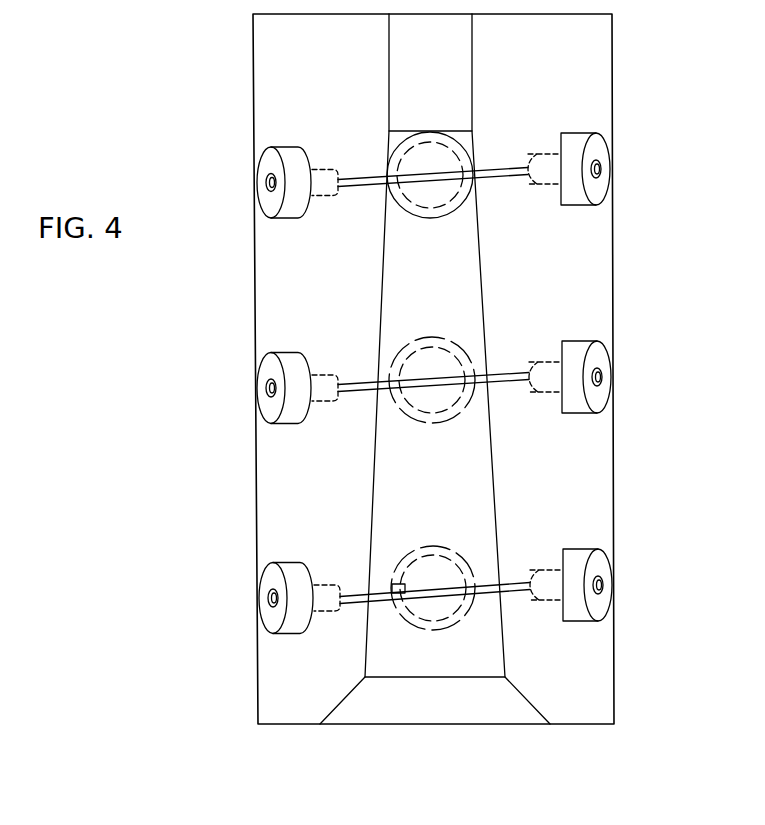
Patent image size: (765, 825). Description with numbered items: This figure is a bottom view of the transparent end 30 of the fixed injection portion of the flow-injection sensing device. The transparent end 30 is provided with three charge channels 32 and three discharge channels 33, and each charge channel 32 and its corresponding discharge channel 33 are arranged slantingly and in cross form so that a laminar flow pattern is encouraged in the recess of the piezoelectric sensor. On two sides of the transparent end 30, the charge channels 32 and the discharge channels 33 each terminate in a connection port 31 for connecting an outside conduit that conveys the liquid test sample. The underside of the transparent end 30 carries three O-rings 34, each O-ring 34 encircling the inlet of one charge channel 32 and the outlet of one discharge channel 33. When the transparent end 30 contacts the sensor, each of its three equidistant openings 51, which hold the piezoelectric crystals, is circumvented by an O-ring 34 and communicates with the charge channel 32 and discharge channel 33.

The transparent end 30 is at (288, 712).
The connection port 31 is at (268, 580).
The charge channel 32 is at (523, 593).
The discharge channel 33 is at (353, 603).
The O-ring 34 is at (428, 633).
The opening 51 is at (415, 608).